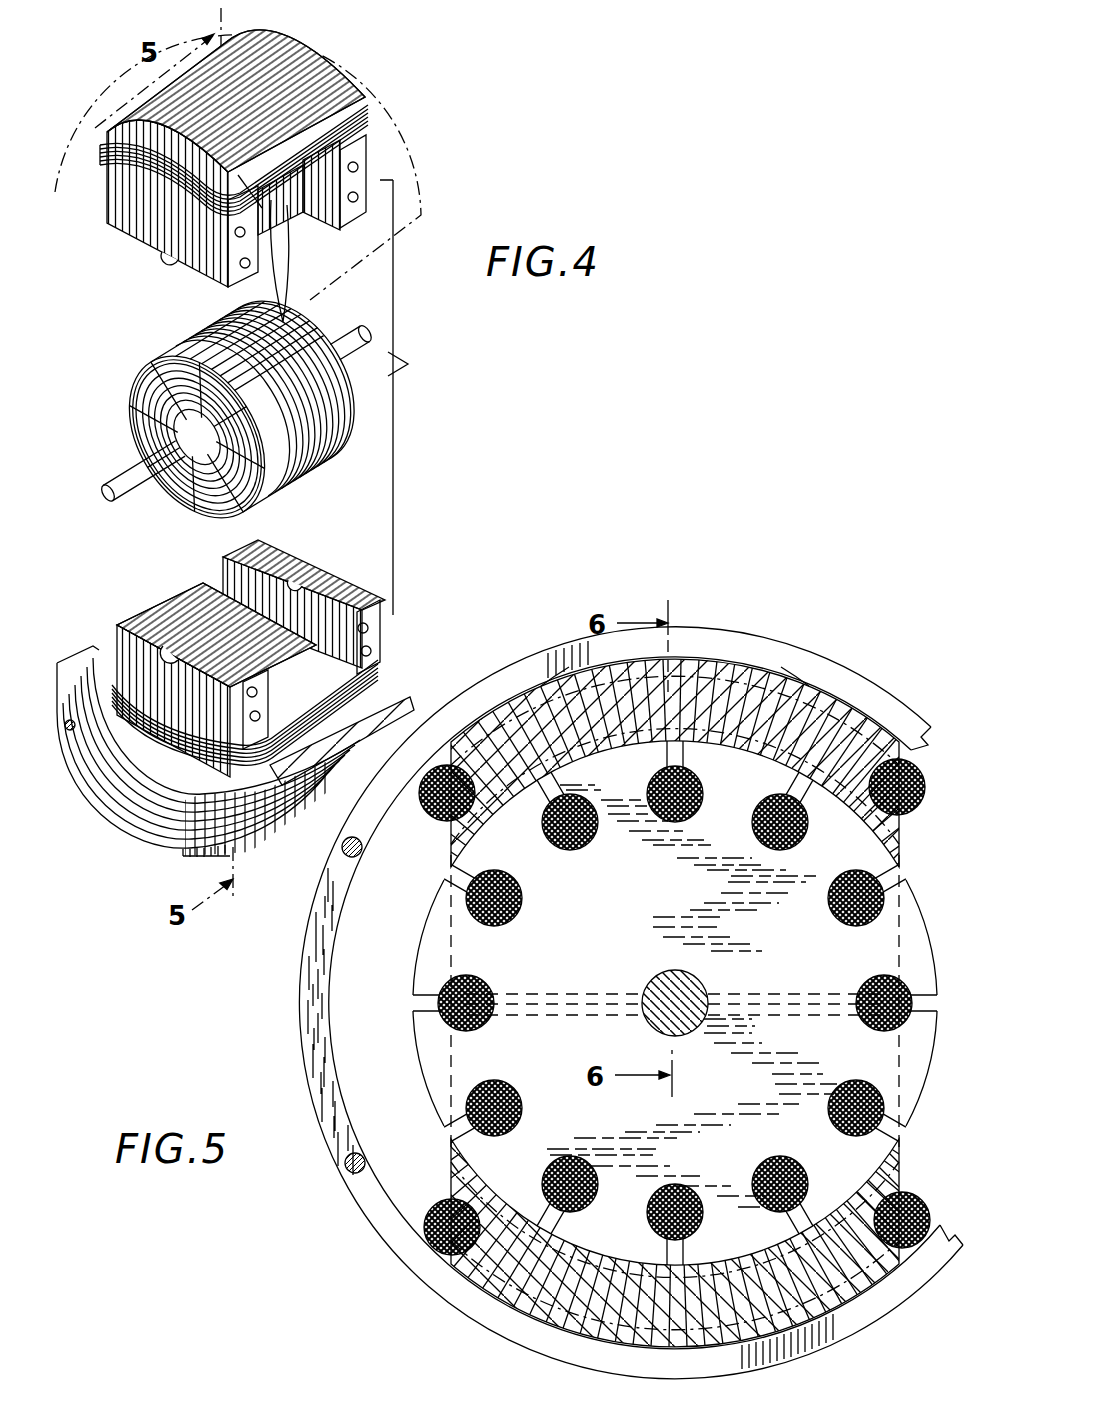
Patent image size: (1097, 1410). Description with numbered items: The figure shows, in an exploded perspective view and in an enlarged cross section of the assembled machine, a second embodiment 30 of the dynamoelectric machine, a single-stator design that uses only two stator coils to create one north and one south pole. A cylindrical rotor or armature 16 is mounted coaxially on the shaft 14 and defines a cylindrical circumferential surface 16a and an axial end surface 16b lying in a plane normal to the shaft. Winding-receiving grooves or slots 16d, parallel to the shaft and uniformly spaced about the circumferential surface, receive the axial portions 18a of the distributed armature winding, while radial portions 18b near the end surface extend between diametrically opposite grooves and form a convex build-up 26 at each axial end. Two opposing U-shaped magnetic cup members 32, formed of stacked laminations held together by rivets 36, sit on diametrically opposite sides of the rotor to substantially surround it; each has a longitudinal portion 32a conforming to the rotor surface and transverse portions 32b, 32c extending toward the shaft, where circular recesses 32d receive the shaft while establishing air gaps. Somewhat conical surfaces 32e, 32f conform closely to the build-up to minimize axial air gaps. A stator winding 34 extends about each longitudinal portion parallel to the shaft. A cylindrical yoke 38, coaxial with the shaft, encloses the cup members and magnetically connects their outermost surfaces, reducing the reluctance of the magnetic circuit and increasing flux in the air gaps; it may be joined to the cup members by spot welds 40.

In FIG. 4, the shaft 14 is at (104, 495).
In FIG. 5, the shaft 14 is at (665, 970).
In FIG. 4, the rotor or armature 16 is at (232, 410).
In FIG. 4, the cylindrical circumferential surface 16a is at (300, 490).
In FIG. 4, the axial end surface 16b is at (262, 500).
In FIG. 4, the rotor coil winding-receiving grooves or slots 16d is at (318, 408).
In FIG. 5, the rotor coil winding-receiving grooves or slots 16d is at (438, 1012).
In FIG. 5, the axial portions of the armature winding 18a is at (516, 912).
In FIG. 4, the radial portions of the armature winding 18b is at (160, 420).
In FIG. 4, the build-up 26 is at (180, 480).
In FIG. 4, the second embodiment of the dynamoelectric machine 30 is at (428, 366).
In FIG. 4, the U-shaped magnetic cup member 32 is at (256, 146).
In FIG. 4, the longitudinal portion 32a is at (273, 60).
In FIG. 5, the longitudinal portion 32a is at (873, 725).
In FIG. 4, the transverse portion 32b is at (120, 218).
In FIG. 4, the transverse portion 32c is at (338, 225).
In FIG. 4, the circular recess 32d is at (165, 258).
In FIG. 4, the somewhat conical surface 32e is at (160, 612).
In FIG. 4, the somewhat conical surface 32f is at (272, 210).
In FIG. 4, the stator winding 34 is at (378, 126).
In FIG. 5, the stator winding 34 is at (440, 820).
In FIG. 4, the rivets 36 is at (358, 170).
In FIG. 4, the cylindrical yoke 38 is at (432, 205).
In FIG. 5, the cylindrical yoke 38 is at (744, 650).
In FIG. 5, the spot welds 40 is at (537, 684).